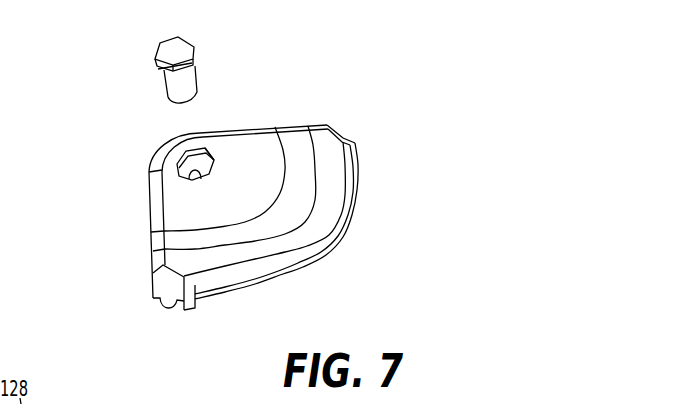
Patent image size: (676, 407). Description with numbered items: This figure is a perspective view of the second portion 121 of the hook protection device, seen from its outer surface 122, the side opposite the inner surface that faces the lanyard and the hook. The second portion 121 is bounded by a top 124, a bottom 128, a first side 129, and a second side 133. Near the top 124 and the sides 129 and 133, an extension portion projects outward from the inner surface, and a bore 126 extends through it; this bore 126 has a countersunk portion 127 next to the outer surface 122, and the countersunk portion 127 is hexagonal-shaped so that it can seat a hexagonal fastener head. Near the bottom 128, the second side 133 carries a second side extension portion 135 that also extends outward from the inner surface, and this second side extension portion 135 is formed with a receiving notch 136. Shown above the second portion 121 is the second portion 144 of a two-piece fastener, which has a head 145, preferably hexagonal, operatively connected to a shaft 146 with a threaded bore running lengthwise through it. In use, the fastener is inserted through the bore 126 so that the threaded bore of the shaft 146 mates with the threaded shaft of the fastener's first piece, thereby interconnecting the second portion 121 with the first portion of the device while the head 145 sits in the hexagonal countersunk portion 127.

The second portion 121 is at (217, 215).
The outer surface 122 is at (262, 152).
The top 124 is at (148, 140).
The bore 126 is at (199, 176).
The countersunk portion 127 is at (208, 152).
The bottom 128 is at (343, 235).
The first side 129 is at (303, 117).
The second side 133 is at (177, 310).
The second side extension portion 135 is at (191, 310).
The receiving notch 136 is at (165, 306).
The second portion of fastener 144 is at (169, 51).
The head 145 is at (177, 55).
The shaft 146 is at (193, 77).